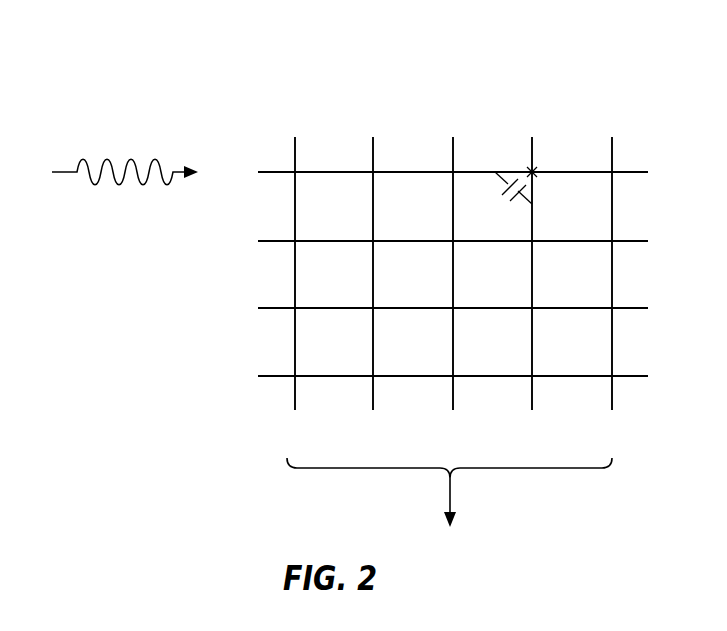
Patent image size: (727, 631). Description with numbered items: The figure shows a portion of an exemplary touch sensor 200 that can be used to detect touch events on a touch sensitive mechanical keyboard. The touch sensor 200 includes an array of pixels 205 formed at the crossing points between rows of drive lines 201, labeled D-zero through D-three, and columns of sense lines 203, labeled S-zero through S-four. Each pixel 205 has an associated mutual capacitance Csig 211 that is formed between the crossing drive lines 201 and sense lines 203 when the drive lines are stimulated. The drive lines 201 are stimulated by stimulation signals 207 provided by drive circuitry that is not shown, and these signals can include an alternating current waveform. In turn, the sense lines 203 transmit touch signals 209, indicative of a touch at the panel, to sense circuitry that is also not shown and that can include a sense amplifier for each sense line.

The touch sensor 200 is at (347, 223).
The drive lines 201 is at (432, 123).
The sense lines 203 is at (332, 247).
The pixel 205 is at (562, 134).
The stimulation signals 207 is at (128, 183).
The touch signals 209 is at (450, 490).
The mutual capacitance Csig 211 is at (461, 203).